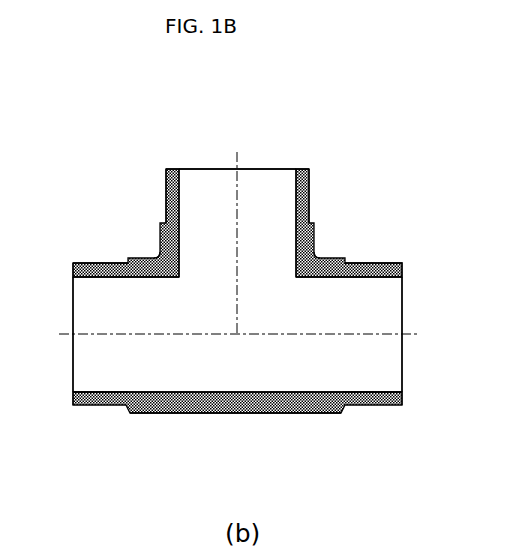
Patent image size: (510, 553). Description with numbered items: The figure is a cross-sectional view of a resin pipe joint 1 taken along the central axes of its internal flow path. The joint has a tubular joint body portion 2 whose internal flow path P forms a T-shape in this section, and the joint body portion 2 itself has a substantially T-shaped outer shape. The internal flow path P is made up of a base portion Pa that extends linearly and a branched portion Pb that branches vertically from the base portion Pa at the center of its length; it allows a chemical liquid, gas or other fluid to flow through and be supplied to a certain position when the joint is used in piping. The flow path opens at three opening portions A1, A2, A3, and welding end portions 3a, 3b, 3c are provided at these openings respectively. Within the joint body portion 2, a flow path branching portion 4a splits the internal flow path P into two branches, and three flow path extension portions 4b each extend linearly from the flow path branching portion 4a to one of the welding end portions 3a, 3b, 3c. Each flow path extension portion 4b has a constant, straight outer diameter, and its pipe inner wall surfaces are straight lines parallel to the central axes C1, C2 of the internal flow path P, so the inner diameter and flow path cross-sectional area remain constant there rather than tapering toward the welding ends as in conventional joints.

The resin pipe joint 1 is at (371, 129).
The joint body portion 2 is at (405, 467).
The welding end portion 3a is at (302, 168).
The welding end portion 3b is at (403, 272).
The welding end portion 3c is at (72, 394).
The flow path branching portion 4a is at (272, 415).
The flow path extension portion 4b is at (165, 183).
The opening portion A1 is at (218, 170).
The opening portion A2 is at (392, 372).
The opening portion A3 is at (80, 308).
The internal flow path P is at (259, 270).
The base portion Pa is at (155, 321).
The branched portion Pb is at (218, 228).
The central axis C1 is at (241, 222).
The central axis C2 is at (260, 338).